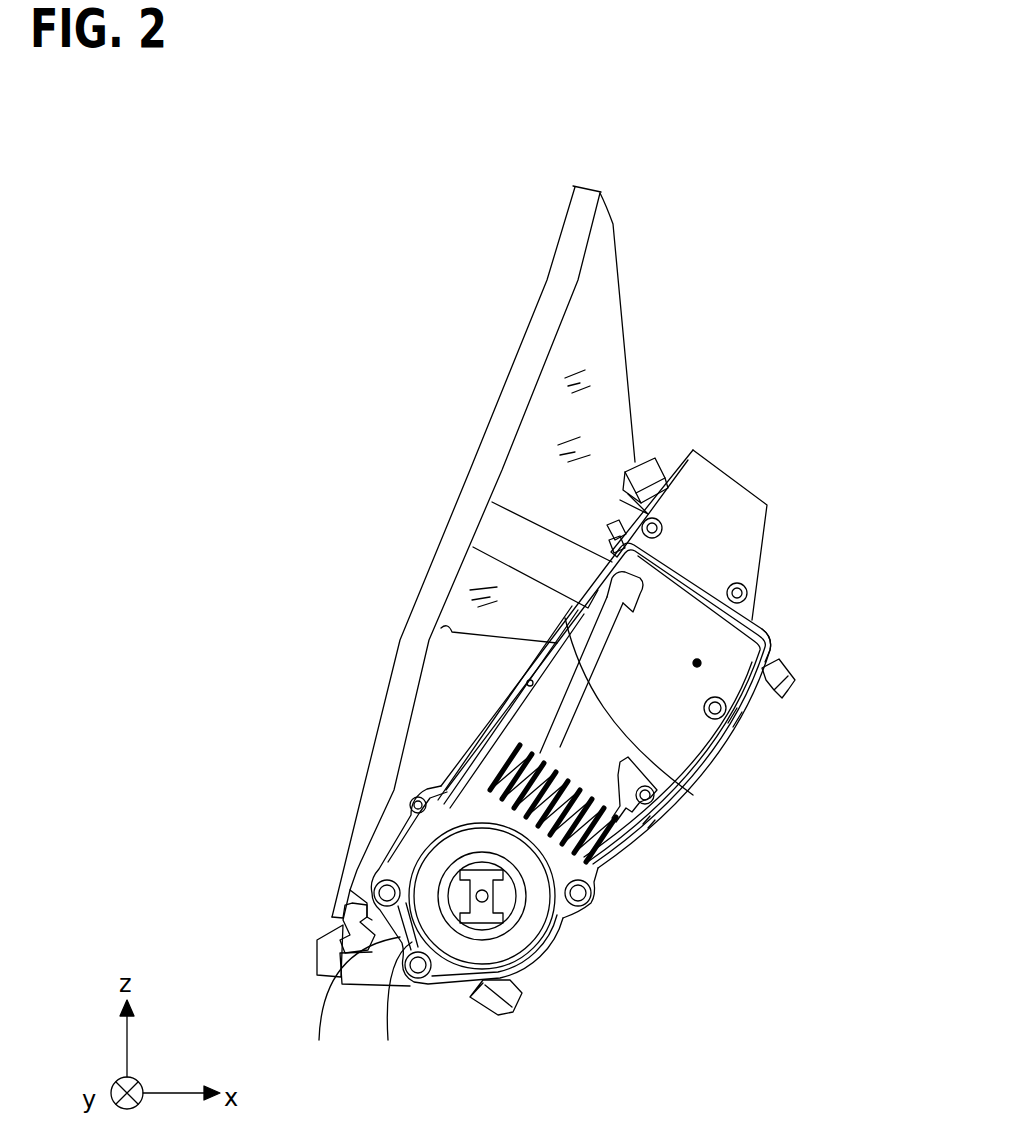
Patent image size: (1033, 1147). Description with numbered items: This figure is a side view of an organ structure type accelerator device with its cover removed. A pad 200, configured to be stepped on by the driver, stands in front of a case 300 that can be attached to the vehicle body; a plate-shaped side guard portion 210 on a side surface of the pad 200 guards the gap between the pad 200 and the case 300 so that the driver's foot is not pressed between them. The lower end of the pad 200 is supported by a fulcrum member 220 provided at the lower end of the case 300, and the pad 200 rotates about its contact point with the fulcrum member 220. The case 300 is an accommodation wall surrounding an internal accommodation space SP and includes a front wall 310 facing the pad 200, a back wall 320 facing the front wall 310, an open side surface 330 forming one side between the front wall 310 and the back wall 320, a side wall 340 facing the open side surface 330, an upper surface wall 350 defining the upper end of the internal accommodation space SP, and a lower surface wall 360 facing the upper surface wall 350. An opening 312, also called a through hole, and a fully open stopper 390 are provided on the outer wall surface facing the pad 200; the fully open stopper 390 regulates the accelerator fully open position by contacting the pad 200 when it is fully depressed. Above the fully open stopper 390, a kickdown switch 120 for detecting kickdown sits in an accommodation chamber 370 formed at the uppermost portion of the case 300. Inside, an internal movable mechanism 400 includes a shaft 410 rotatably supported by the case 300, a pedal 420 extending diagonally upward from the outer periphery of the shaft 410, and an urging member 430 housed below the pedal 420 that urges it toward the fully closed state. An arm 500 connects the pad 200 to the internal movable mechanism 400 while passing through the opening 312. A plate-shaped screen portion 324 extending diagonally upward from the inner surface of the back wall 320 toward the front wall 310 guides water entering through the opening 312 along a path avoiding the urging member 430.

The pad 200 is at (555, 297).
The side guard portion 210 is at (603, 306).
The kickdown switch 120 is at (660, 456).
The accommodation chamber 370 is at (723, 497).
The case 300 is at (778, 494).
The fully open stopper 390 is at (615, 522).
The arm 500 is at (498, 533).
The opening 312 is at (563, 602).
The front wall 310 is at (490, 708).
The upper surface wall 350 is at (695, 595).
The side wall 340 is at (699, 661).
The internal accommodation space SP is at (662, 689).
The back wall 320 is at (740, 717).
The open side surface 330 is at (720, 750).
The pedal 420 is at (690, 718).
The urging member 430 is at (637, 847).
The shaft 410 is at (600, 873).
The internal movable mechanism 400 is at (618, 866).
The screen portion 324 is at (620, 767).
The fulcrum member 220 is at (322, 975).
The lower surface wall 360 is at (384, 938).